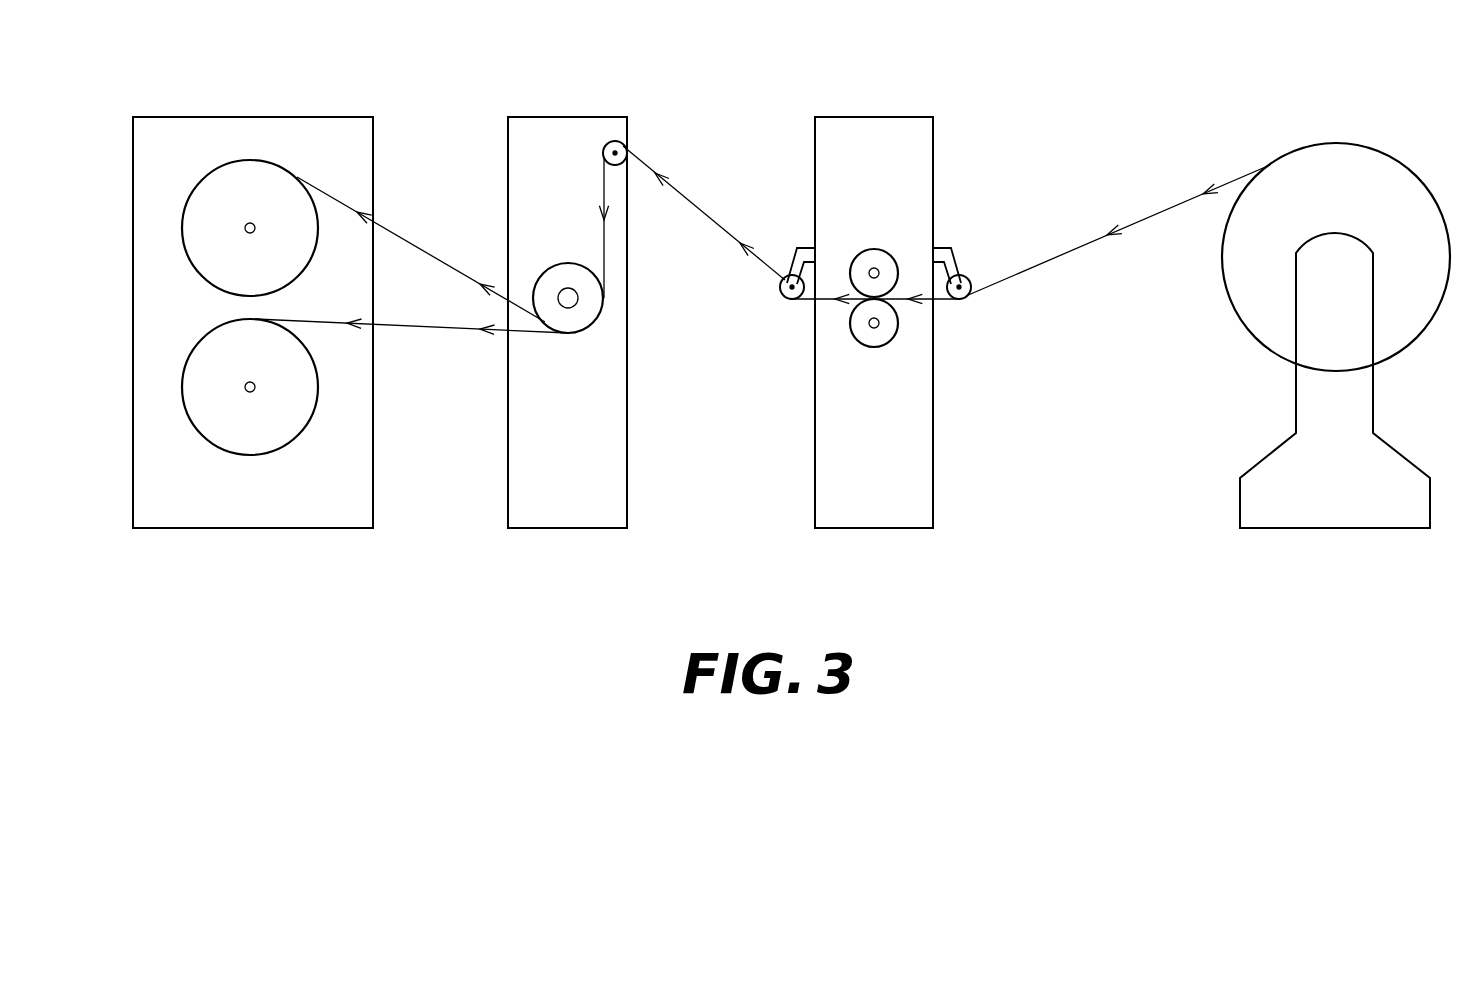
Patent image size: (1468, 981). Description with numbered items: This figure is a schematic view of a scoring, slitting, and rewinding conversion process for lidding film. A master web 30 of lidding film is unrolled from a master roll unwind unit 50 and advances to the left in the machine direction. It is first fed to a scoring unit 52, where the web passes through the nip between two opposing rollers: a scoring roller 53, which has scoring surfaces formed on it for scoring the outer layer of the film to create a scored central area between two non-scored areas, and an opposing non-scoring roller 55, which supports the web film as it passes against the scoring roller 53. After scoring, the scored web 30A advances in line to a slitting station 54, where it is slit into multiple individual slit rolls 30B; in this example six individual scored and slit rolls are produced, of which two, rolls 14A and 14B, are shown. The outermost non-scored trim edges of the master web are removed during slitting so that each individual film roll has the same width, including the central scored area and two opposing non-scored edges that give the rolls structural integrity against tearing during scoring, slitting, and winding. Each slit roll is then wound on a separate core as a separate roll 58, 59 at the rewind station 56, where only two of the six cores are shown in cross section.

The scored and slit roll 14A is at (330, 195).
The scored and slit roll 14B is at (310, 323).
The master web 30 is at (1133, 220).
The scored web 30A is at (687, 202).
The slit roll 30B is at (411, 293).
The master roll unwind unit 50 is at (1240, 478).
The scoring unit 52 is at (880, 115).
The scoring roller 53 is at (892, 255).
The slitting station 54 is at (553, 117).
The non-scoring roller 55 is at (898, 327).
The rewind station 56 is at (208, 117).
The separate roll 58 is at (202, 177).
The separate roll 59 is at (193, 427).